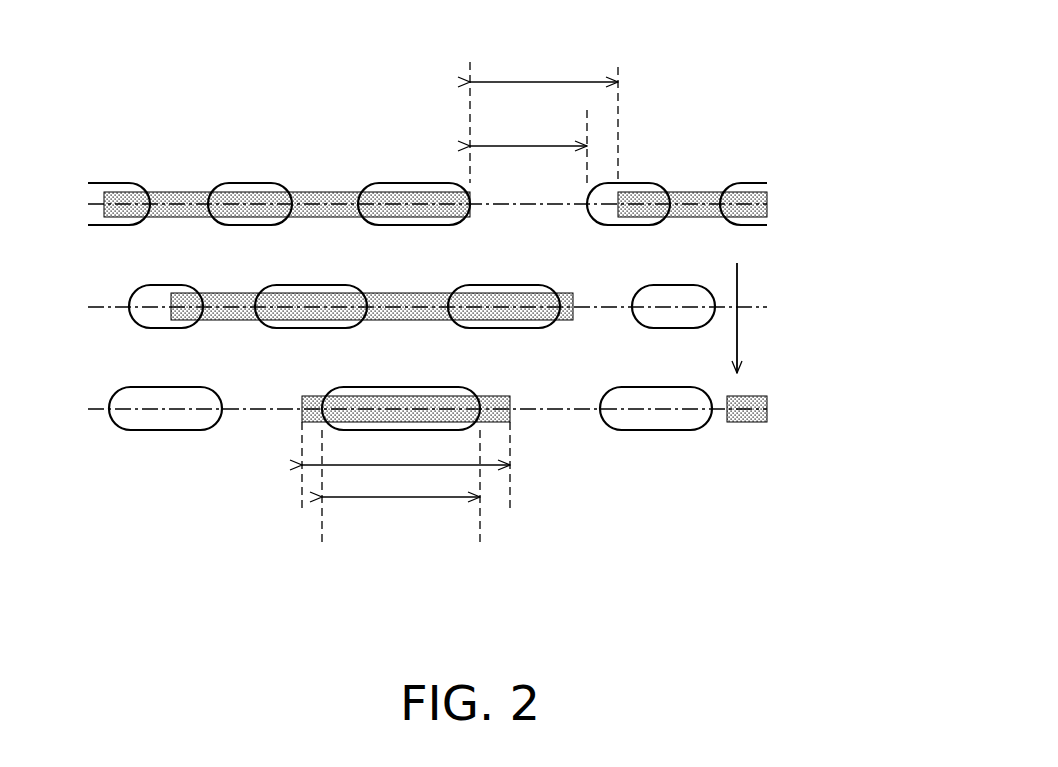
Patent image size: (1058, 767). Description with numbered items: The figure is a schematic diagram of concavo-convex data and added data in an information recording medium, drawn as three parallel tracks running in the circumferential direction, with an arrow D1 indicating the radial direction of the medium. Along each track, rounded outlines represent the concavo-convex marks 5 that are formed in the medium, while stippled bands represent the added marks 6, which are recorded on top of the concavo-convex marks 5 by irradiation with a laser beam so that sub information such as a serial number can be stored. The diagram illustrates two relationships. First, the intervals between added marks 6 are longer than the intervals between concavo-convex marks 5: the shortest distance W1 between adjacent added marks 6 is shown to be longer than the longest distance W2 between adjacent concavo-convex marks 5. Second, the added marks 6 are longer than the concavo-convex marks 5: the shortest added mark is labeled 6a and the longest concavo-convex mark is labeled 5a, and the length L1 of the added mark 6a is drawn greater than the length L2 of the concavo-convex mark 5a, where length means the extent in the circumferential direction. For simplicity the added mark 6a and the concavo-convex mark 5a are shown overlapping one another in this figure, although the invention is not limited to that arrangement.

The concavo-convex marks 5 is at (250, 184).
The added marks 6 is at (327, 192).
The longest concavo-convex mark 5a is at (420, 388).
The shortest added mark 6a is at (312, 396).
The shortest distance between adjacent added marks W1 is at (530, 82).
The longest distance between adjacent concavo-convex marks W2 is at (560, 146).
The length of the added mark L1 is at (343, 464).
The length of the concavo-convex mark L2 is at (425, 497).
The radial direction D1 is at (737, 278).